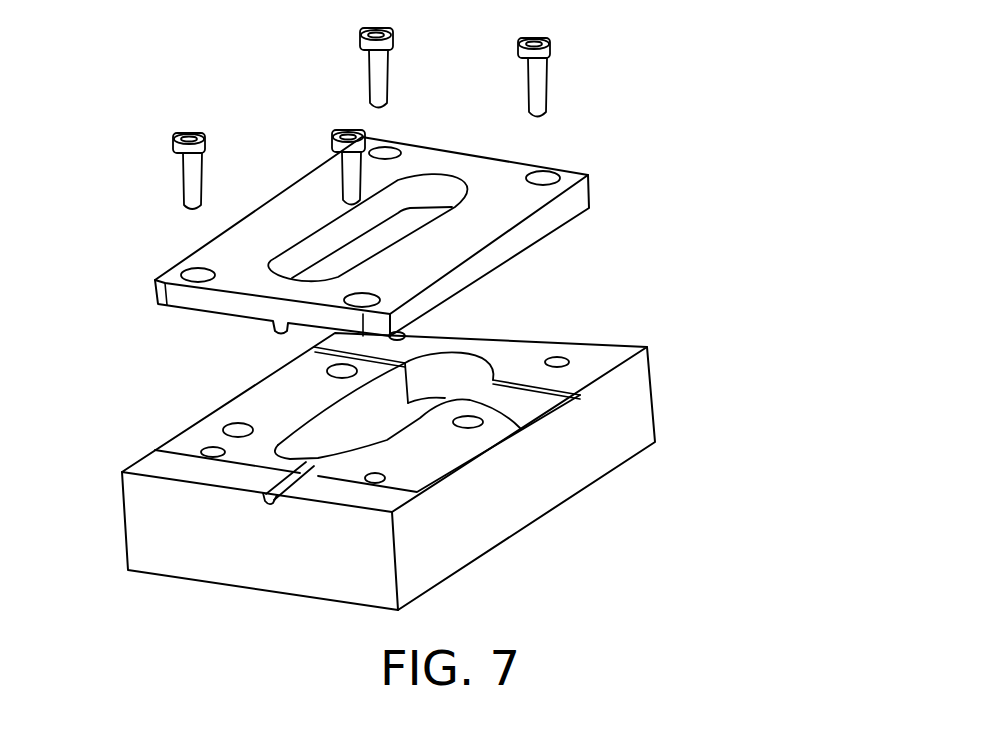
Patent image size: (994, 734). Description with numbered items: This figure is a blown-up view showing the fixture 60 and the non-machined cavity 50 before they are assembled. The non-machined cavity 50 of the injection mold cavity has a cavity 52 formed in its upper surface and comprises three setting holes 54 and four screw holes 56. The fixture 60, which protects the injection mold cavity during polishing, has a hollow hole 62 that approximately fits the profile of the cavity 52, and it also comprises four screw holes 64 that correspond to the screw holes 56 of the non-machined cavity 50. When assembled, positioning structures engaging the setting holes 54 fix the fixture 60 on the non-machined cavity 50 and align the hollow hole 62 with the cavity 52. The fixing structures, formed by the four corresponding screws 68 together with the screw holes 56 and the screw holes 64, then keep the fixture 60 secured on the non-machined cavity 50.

The non-machined cavity 50 is at (550, 539).
The cavity 52 is at (372, 437).
The setting holes 54 is at (238, 426).
The screw holes 56 is at (558, 358).
The fixture 60 is at (420, 130).
The hollow hole 62 is at (335, 258).
The screw holes 64 is at (546, 166).
The screws 68 is at (541, 92).